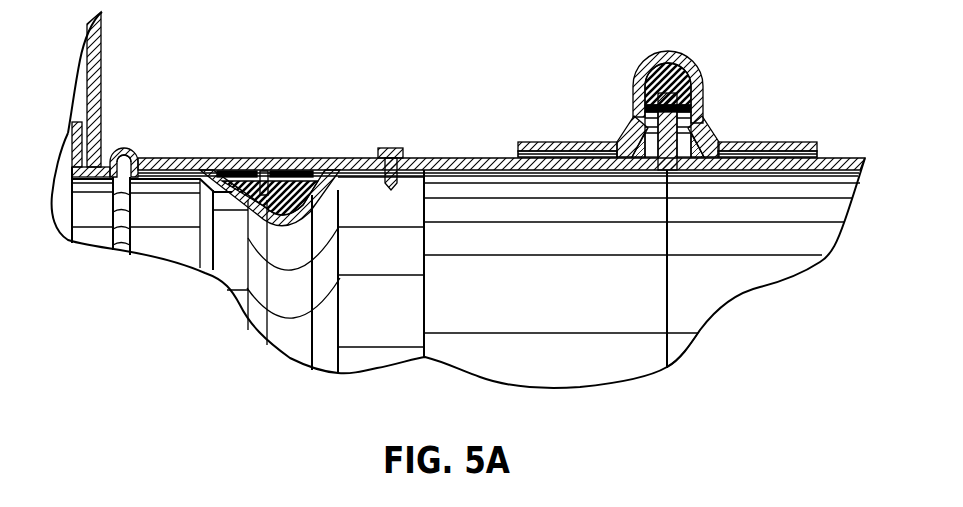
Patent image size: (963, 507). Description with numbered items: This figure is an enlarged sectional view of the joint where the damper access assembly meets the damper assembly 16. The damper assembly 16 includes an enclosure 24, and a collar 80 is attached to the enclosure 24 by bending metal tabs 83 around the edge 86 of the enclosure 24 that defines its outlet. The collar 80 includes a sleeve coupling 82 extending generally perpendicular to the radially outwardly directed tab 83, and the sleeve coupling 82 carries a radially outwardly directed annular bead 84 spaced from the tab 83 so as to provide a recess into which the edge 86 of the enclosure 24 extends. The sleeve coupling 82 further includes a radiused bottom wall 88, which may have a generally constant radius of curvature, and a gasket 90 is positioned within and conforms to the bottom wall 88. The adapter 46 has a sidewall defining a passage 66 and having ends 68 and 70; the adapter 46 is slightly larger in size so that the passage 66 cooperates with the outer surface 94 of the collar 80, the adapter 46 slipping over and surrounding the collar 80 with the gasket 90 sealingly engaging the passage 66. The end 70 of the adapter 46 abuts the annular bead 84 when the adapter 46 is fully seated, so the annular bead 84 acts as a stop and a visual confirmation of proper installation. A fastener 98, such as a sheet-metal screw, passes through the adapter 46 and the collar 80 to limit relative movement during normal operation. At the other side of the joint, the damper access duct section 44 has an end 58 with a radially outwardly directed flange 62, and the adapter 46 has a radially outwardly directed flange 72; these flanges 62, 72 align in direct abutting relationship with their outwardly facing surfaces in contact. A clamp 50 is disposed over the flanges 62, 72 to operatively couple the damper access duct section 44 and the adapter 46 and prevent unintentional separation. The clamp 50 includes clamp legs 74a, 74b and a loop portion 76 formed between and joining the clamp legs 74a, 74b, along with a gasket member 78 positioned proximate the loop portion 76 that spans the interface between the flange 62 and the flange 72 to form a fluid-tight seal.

The damper assembly 16 is at (106, 31).
The enclosure 24 is at (102, 60).
The damper access duct section 44 is at (848, 158).
The adapter 46 is at (446, 158).
The clamp 50 is at (699, 89).
The end 58 is at (622, 381).
The radially outwardly directed flange 62 is at (703, 126).
The passage 66 is at (642, 269).
The end 68 is at (667, 302).
The end 70 is at (122, 176).
The radially outwardly directed flange 72 is at (636, 126).
The clamp leg 74a is at (804, 142).
The clamp leg 74b is at (535, 142).
The loop portion 76 is at (658, 52).
The gasket member 78 is at (697, 70).
The collar 80 is at (136, 147).
The sleeve coupling 82 is at (86, 185).
The tab 83 is at (72, 146).
The annular bead 84 is at (119, 148).
The edge 86 is at (68, 177).
The radiused bottom wall 88 is at (285, 236).
The gasket 90 is at (298, 173).
The outer surface 94 is at (218, 171).
The fastener 98 is at (393, 148).